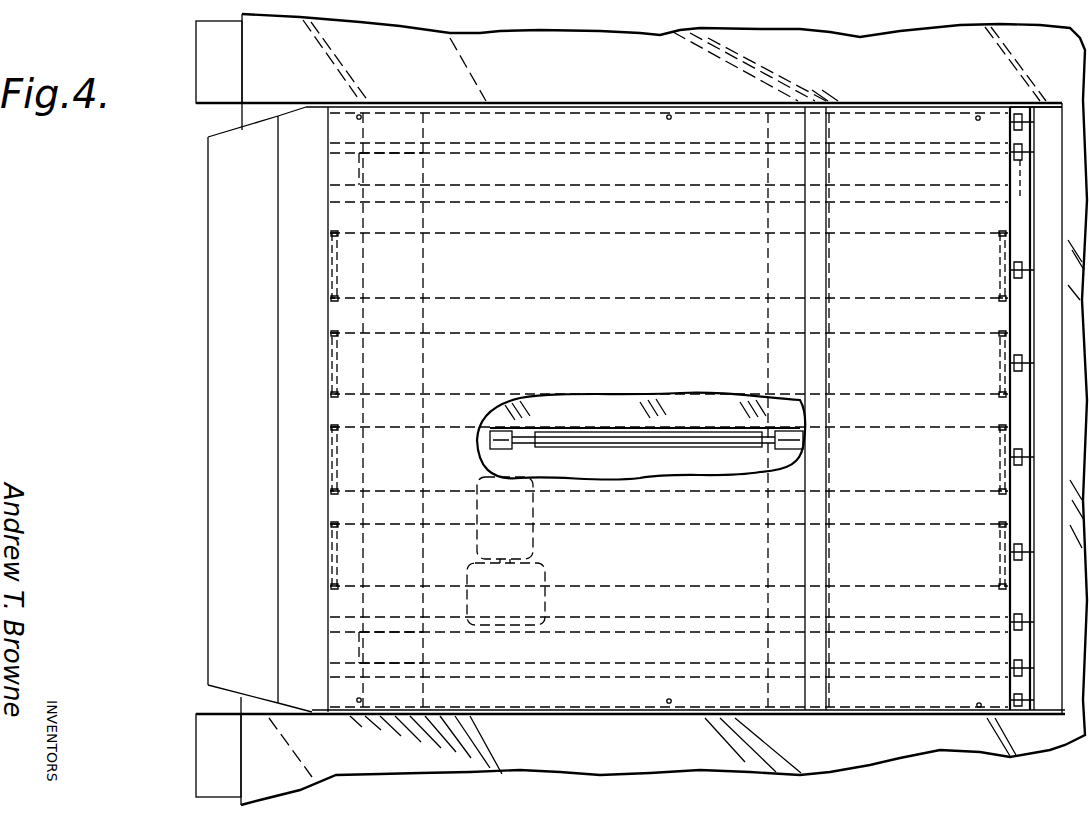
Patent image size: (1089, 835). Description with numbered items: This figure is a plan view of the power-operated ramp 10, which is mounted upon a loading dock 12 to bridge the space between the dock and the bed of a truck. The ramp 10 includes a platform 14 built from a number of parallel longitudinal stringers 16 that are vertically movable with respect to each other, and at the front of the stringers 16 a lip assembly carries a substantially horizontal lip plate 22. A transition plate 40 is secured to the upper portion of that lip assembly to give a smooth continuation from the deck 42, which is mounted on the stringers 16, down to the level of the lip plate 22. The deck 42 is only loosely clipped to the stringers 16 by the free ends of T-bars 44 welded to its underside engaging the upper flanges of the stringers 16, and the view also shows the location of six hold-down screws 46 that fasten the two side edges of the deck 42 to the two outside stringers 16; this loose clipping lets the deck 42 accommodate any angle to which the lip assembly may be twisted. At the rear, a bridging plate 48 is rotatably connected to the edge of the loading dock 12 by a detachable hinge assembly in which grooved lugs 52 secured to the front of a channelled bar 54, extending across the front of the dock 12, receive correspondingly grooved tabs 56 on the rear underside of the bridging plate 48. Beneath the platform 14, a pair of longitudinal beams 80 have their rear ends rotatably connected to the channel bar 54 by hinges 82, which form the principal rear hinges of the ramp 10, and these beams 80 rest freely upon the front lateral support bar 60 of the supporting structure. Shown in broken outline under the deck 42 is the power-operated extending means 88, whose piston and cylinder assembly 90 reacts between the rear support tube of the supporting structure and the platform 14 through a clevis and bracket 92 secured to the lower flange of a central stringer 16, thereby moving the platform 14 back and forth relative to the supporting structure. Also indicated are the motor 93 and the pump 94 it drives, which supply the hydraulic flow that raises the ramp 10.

The power-operated ramp 10 is at (206, 336).
The loading dock 12 is at (703, 775).
The platform 14 is at (591, 103).
The stringers 16 is at (925, 700).
The lip plate 22 is at (230, 478).
The transition plate 40 is at (297, 252).
The deck 42 is at (692, 125).
The T-bars 44 is at (331, 430).
The hold-down screws 46 is at (361, 115).
The bridging plate 48 is at (940, 147).
The grooved lugs 52 is at (1024, 550).
The channelled bar 54 is at (1050, 700).
The grooved tabs 56 is at (1020, 560).
The front lateral support bar 60 is at (400, 372).
The longitudinal beams 80 is at (375, 652).
The hinges 82 is at (1020, 655).
The power-operated extending means 88 is at (621, 448).
The piston and cylinder assembly 90 is at (722, 448).
The clevis and bracket 92 is at (496, 449).
The motor 93 is at (528, 545).
The pump 94 is at (538, 603).